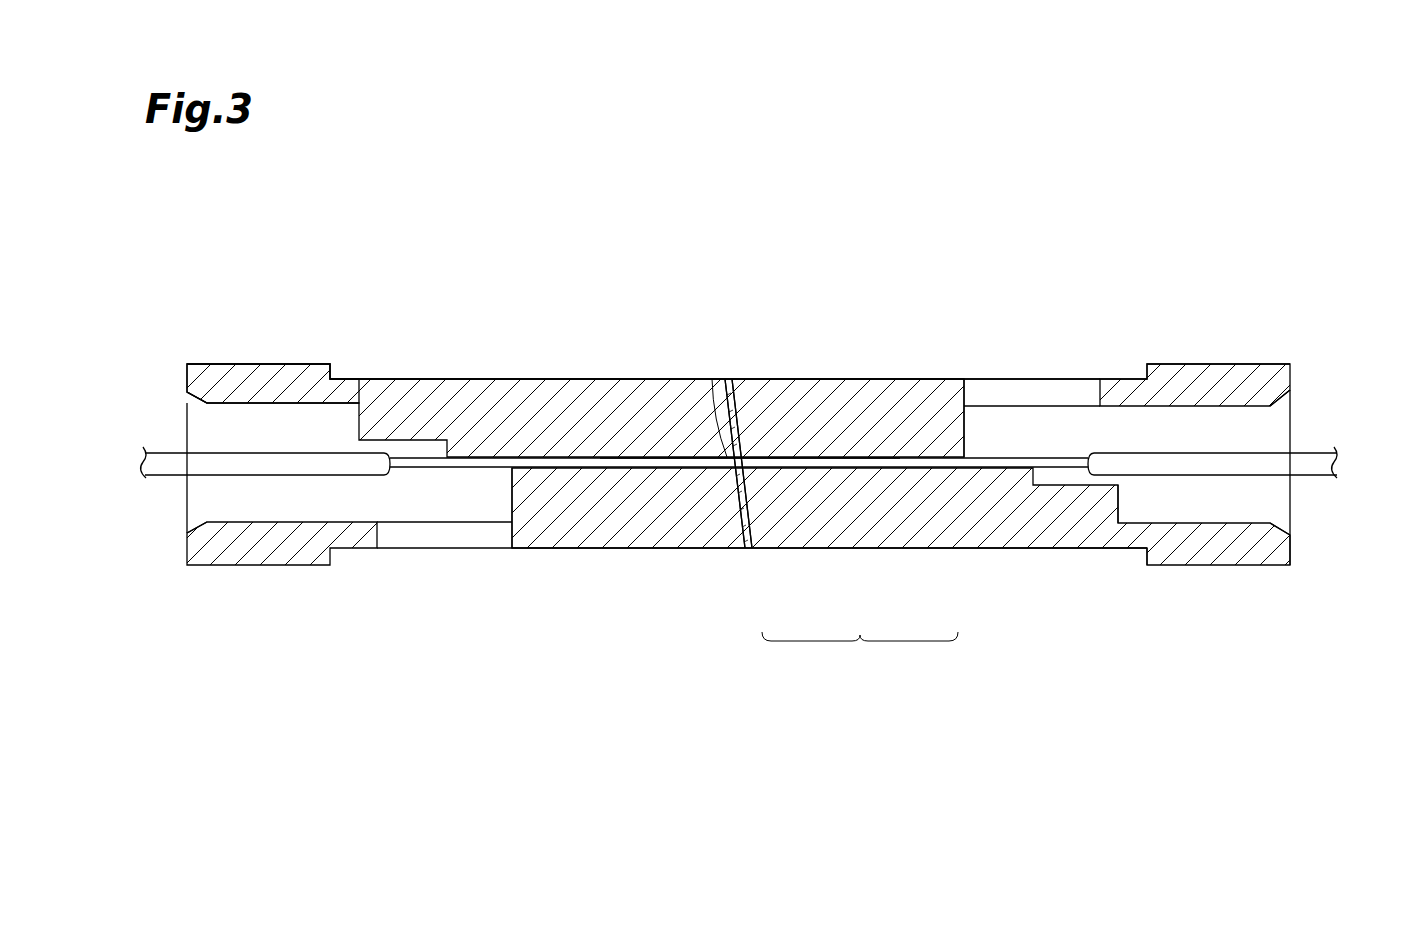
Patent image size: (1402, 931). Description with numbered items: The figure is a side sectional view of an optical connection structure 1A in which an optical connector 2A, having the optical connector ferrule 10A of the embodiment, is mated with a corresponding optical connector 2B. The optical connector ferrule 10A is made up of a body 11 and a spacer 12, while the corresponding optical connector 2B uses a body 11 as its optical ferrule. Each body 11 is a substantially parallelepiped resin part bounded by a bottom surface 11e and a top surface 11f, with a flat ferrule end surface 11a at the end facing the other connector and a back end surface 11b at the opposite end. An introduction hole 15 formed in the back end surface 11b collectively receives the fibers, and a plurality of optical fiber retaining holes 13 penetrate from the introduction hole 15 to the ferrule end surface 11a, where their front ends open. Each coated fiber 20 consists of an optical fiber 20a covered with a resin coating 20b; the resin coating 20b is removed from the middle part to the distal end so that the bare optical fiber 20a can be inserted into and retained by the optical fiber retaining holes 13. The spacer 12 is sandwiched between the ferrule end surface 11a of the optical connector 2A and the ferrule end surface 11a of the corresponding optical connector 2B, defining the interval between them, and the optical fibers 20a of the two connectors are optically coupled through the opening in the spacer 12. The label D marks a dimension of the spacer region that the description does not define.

The optical connection structure 1A is at (1056, 168).
The optical connector 2A is at (1062, 340).
The corresponding optical connector 2B is at (387, 352).
The optical connector ferrule 10A is at (860, 655).
The body 11 is at (536, 372).
The ferrule end surface 11a is at (742, 445).
The back end surface 11b is at (187, 553).
The bottom surface 11e is at (465, 379).
The top surface 11f is at (950, 379).
The spacer 12 is at (731, 379).
The optical fiber retaining holes 13 is at (649, 457).
The introduction hole 15 is at (198, 410).
The coated fiber 20 is at (738, 478).
The optical fibers 20a is at (883, 458).
The resin coating 20b is at (144, 462).
The inclination distance D is at (712, 379).